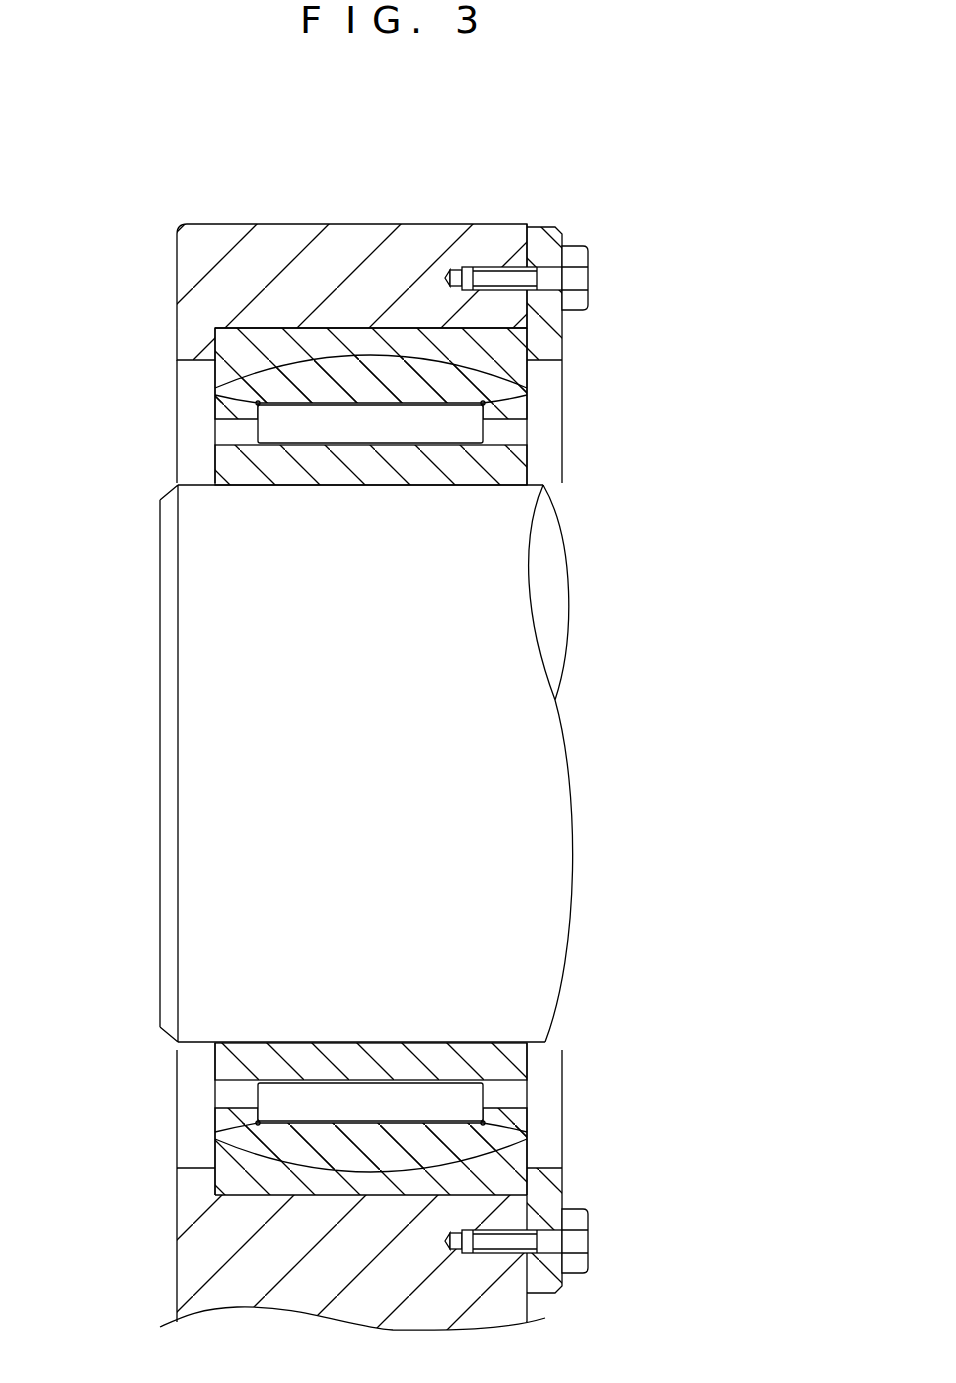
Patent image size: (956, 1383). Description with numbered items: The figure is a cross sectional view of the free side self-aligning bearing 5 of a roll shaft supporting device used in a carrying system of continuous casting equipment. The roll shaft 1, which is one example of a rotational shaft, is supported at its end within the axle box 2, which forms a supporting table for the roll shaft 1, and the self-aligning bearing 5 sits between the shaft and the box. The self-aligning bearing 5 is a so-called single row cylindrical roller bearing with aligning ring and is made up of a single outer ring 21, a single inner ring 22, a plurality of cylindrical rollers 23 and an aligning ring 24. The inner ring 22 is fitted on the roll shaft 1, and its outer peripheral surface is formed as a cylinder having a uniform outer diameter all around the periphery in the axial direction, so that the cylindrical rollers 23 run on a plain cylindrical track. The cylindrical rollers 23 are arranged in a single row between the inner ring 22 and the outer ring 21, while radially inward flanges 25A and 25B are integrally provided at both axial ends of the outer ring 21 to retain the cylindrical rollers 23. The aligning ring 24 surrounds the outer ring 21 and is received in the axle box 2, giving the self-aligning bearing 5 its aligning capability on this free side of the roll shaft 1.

The roll shaft 1 is at (207, 792).
The axle box 2 is at (375, 240).
The self-aligning bearing 5 is at (213, 329).
The outer ring 21 is at (365, 370).
The inner ring 22 is at (433, 473).
The cylindrical rollers 23 is at (368, 432).
The aligning ring 24 is at (270, 340).
The radially inward flange 25A is at (513, 420).
The radially inward flange 25B is at (230, 420).